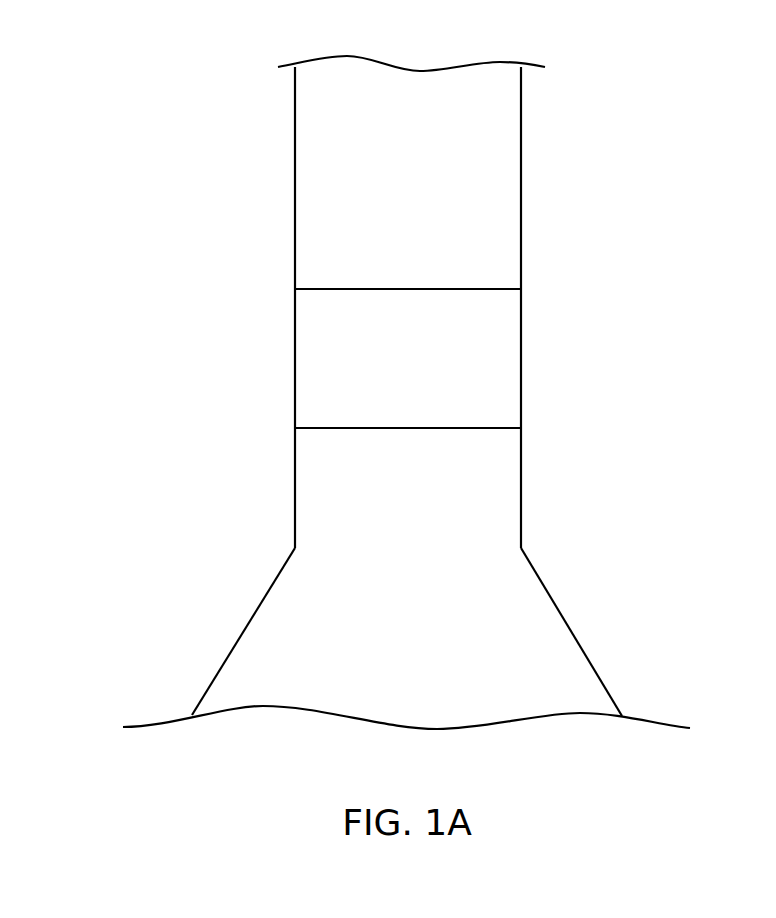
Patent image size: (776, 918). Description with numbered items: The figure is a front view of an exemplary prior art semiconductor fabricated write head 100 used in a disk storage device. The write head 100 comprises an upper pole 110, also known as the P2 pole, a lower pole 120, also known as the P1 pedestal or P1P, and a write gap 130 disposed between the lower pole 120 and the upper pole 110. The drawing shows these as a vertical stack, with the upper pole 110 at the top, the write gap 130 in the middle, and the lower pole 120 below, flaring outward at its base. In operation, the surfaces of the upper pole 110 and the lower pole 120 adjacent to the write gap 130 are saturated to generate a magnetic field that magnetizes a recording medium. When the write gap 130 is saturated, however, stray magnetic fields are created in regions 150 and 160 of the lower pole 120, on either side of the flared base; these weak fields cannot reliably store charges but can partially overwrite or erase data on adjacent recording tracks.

The write head 100 is at (205, 174).
The upper pole 110 is at (411, 172).
The write gap 130 is at (408, 358).
The lower pole 120 is at (408, 488).
The region of the P1P 150 is at (241, 617).
The region of the P1P 160 is at (575, 618).